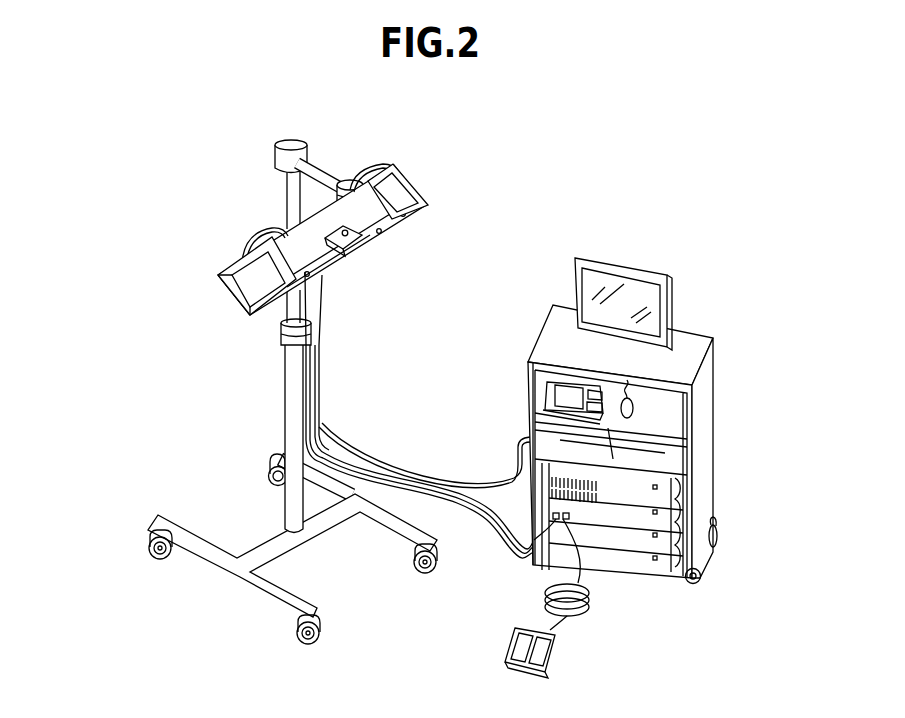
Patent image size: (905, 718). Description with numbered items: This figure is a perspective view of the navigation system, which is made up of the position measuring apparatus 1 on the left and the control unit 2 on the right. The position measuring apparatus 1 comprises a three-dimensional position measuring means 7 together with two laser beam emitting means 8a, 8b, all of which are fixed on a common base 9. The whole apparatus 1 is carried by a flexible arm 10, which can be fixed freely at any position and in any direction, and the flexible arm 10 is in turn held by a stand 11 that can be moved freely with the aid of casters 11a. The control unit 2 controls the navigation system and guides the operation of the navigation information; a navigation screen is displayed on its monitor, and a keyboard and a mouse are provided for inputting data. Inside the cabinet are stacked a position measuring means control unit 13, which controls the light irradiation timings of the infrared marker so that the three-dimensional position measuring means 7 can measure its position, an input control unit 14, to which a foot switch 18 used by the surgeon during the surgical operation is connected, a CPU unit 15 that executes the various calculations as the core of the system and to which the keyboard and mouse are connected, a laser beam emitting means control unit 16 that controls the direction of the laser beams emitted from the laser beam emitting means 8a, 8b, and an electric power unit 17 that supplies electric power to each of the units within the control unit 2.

The position measuring apparatus 1 is at (293, 385).
The control unit 2 is at (659, 410).
The three-dimensional position measuring means 7 is at (283, 233).
The laser beam emitting means 8a is at (403, 182).
The laser beam emitting means 8b is at (250, 262).
The base 9 is at (233, 293).
The flexible arm 10 is at (317, 172).
The stand 11 is at (245, 394).
The casters 11a is at (148, 548).
The position measuring means control unit 13 is at (593, 449).
The input control unit 14 is at (680, 488).
The CPU unit 15 is at (680, 512).
The laser beam emitting means control unit 16 is at (680, 535).
The electric power unit 17 is at (680, 562).
The foot switch 18 is at (557, 660).